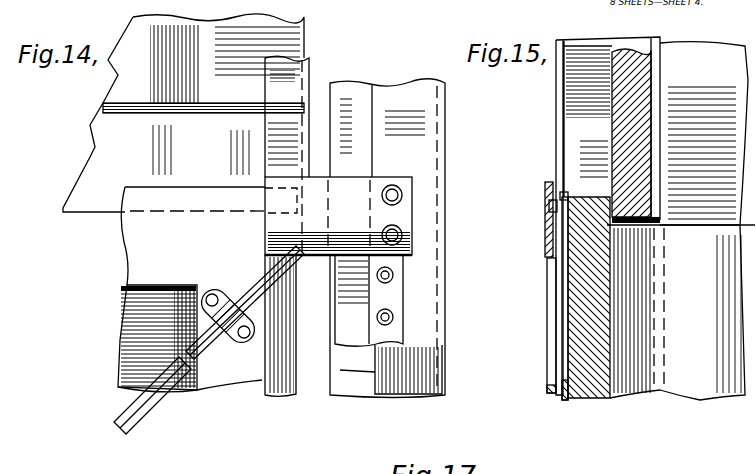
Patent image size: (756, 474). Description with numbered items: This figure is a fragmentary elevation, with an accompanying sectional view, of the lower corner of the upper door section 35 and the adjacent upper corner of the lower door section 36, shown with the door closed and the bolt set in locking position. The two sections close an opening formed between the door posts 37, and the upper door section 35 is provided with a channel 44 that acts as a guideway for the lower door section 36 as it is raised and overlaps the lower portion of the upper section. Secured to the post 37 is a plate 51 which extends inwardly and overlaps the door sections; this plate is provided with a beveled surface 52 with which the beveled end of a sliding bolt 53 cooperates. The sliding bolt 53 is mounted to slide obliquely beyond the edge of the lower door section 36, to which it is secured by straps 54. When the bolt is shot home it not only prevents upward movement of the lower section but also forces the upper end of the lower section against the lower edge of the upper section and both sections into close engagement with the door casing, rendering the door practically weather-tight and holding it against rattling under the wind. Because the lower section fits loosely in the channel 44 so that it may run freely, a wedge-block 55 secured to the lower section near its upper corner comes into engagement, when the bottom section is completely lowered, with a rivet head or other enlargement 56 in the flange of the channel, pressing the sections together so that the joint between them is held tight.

In FIG. 14, the upper door section 35 is at (120, 93).
In FIG. 15, the upper door section 35 is at (630, 96).
In FIG. 14, the lower door section 36 is at (135, 345).
In FIG. 15, the lower door section 36 is at (592, 378).
In FIG. 14, the door post 37 is at (425, 158).
In FIG. 14, the channel 44 is at (292, 75).
In FIG. 15, the channel 44 is at (556, 113).
In FIG. 14, the plate 51 is at (337, 201).
In FIG. 15, the plate 51 is at (546, 226).
In FIG. 15, the beveled surface 52 is at (560, 238).
In FIG. 14, the sliding bolt 53 is at (280, 304).
In FIG. 15, the sliding bolt 53 is at (543, 297).
In FIG. 14, the strap 54 is at (237, 297).
In FIG. 15, the wedge-block 55 is at (566, 195).
In FIG. 15, the rivet head or enlargement 56 is at (548, 206).